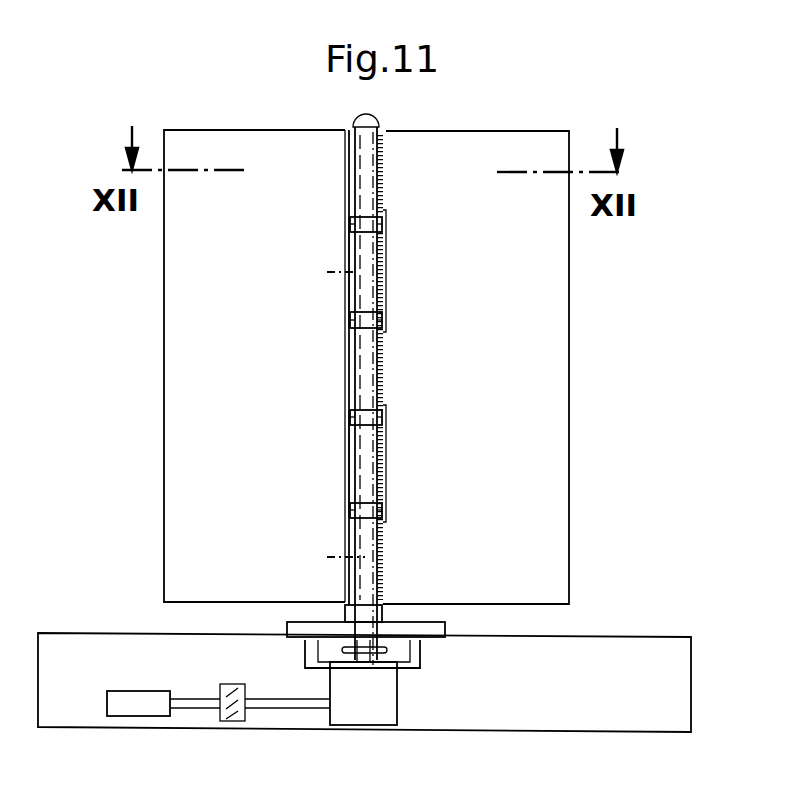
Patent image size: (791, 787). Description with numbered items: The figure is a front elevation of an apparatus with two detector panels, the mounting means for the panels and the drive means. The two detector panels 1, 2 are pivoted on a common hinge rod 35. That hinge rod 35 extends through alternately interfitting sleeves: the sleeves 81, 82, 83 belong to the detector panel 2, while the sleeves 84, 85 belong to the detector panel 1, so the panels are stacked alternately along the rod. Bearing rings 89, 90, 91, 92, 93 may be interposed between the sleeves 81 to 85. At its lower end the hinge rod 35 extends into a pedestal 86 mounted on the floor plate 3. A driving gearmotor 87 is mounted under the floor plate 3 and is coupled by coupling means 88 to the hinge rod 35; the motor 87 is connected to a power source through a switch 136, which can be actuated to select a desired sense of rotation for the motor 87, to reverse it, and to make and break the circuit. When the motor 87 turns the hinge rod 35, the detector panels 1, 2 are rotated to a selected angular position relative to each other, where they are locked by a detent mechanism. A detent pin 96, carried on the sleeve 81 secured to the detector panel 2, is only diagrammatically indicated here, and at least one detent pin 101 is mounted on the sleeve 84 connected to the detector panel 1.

The detector panel 1 is at (178, 320).
The detector panel 2 is at (548, 318).
The floor plate 3 is at (612, 663).
The hinge rod 35 is at (363, 373).
The sleeve 81 is at (381, 154).
The sleeve 82 is at (383, 385).
The sleeve 83 is at (372, 543).
The sleeve 84 is at (360, 250).
The sleeve 85 is at (353, 462).
The pedestal 86 is at (287, 638).
The driving gearmotor 87 is at (383, 703).
The coupling means 88 is at (387, 650).
The bearing ring 89 is at (382, 225).
The bearing ring 90 is at (382, 318).
The bearing ring 91 is at (382, 418).
The bearing ring 92 is at (382, 508).
The bearing ring 93 is at (345, 612).
The detent pin 96 is at (386, 177).
The detent pin 101 is at (327, 273).
The switch 136 is at (225, 722).